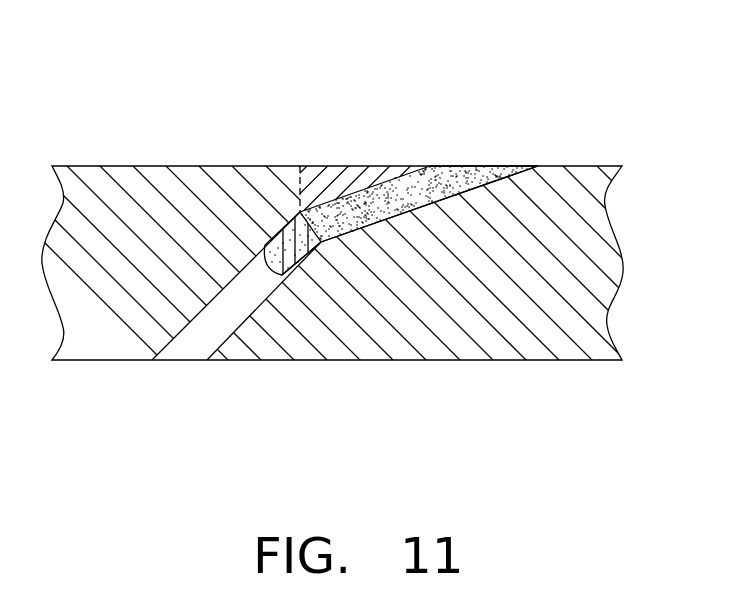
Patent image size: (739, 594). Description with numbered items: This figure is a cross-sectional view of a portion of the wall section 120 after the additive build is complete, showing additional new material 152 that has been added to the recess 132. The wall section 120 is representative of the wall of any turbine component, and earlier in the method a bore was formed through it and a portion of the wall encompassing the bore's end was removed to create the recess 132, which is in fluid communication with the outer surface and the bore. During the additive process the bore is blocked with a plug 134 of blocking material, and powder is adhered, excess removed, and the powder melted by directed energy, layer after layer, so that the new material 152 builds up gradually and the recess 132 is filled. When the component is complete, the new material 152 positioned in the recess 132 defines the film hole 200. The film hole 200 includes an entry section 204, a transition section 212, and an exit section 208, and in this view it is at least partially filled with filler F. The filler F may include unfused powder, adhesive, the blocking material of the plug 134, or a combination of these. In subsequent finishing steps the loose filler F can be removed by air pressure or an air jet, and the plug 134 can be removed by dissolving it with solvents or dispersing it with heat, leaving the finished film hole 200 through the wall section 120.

The wall section 120 is at (490, 72).
The entry section 204 is at (197, 343).
The film hole 200 is at (542, 165).
The exit section 208 is at (472, 192).
The recess 132 is at (474, 176).
The new material 152 is at (322, 172).
The plug 134 is at (283, 235).
The transition section 212 is at (320, 247).
The filler F is at (442, 172).